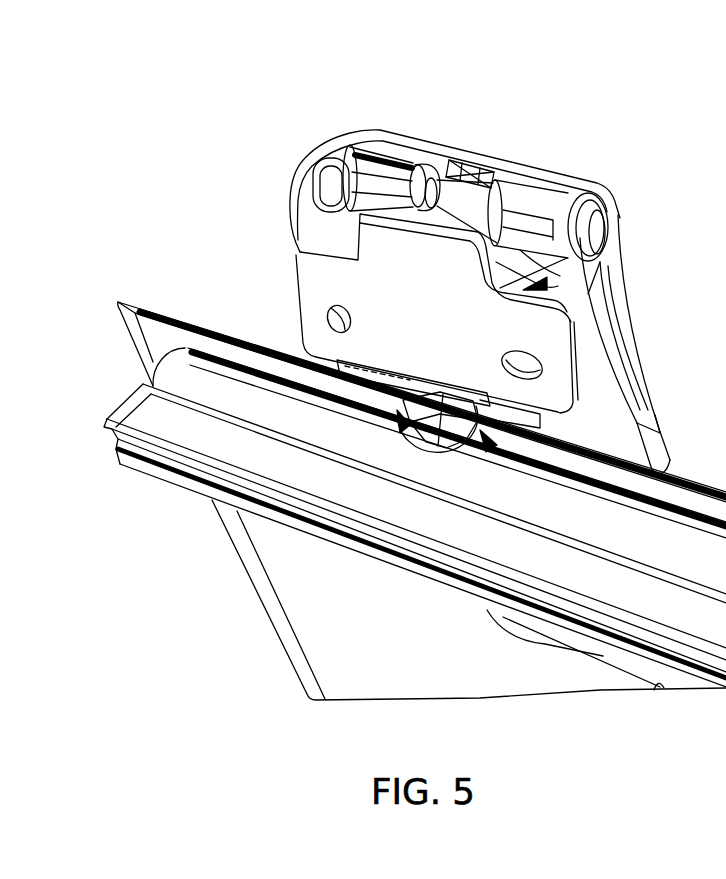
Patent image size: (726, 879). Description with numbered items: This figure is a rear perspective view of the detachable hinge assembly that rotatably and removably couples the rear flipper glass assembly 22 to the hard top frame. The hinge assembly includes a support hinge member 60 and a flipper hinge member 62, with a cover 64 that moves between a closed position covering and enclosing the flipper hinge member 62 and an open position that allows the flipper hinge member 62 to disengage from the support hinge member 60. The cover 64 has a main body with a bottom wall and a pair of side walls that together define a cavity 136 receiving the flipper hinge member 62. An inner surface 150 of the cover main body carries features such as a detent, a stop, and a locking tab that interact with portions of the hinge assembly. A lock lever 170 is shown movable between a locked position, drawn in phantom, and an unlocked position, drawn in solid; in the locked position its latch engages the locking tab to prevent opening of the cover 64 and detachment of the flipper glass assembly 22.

The flipper glass assembly 22 is at (449, 124).
The support hinge member 60 is at (290, 286).
The flipper hinge member 62 is at (505, 297).
The cover 64 is at (309, 152).
The cavity 136 is at (640, 373).
The inner surface 150 is at (590, 296).
The lock lever 170 is at (425, 462).